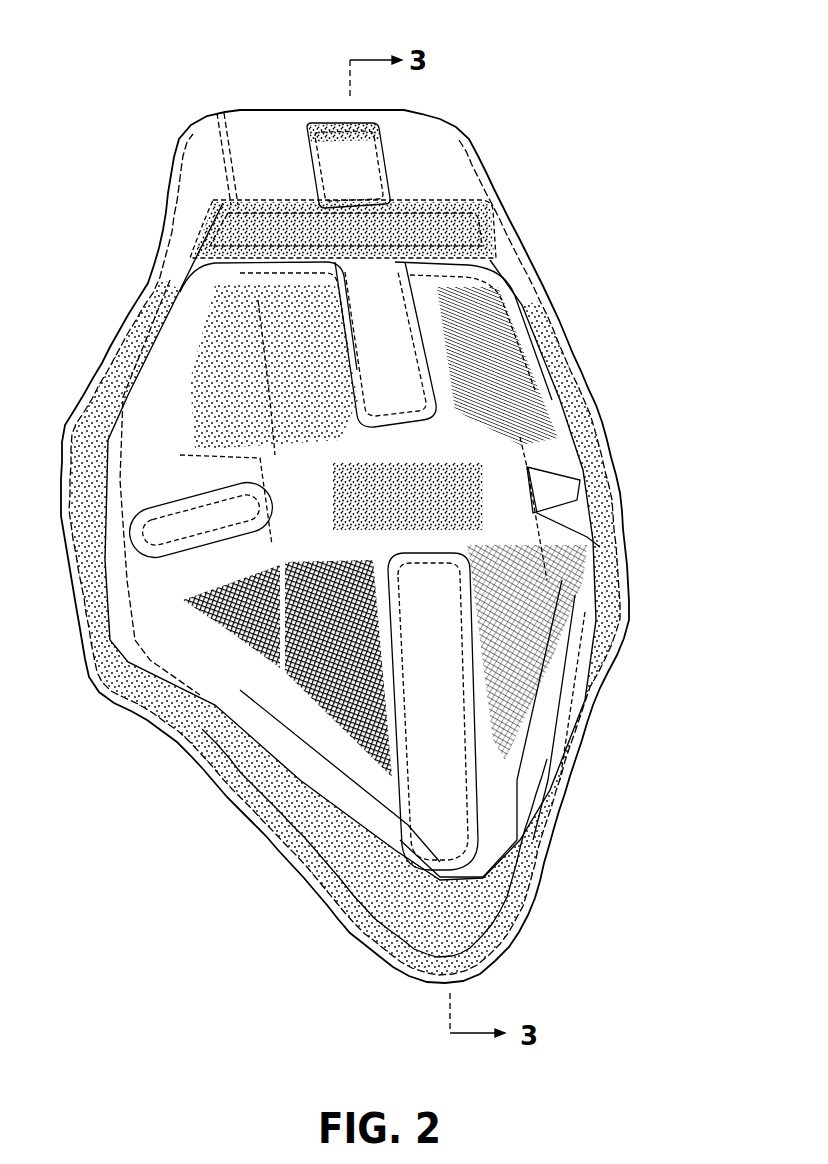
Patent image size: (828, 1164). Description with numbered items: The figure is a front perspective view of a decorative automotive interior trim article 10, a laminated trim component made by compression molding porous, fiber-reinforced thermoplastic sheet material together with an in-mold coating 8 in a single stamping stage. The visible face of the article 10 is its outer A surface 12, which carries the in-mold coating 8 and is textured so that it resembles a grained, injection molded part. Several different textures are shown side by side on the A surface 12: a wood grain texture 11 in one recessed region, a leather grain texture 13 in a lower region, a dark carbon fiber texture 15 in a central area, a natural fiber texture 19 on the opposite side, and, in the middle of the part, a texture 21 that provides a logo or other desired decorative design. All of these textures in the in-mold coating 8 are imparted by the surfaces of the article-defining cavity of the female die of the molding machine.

The in-mold coating 8 is at (410, 110).
The in-mold coated plastic article 10 is at (575, 73).
The wood grain texture 11 is at (523, 350).
The outer A surface 12 is at (263, 120).
The leather grain texture 13 is at (533, 667).
The carbon fiber texture 15 is at (317, 700).
The natural fiber texture 19 is at (203, 373).
The logo texture 21 is at (477, 480).